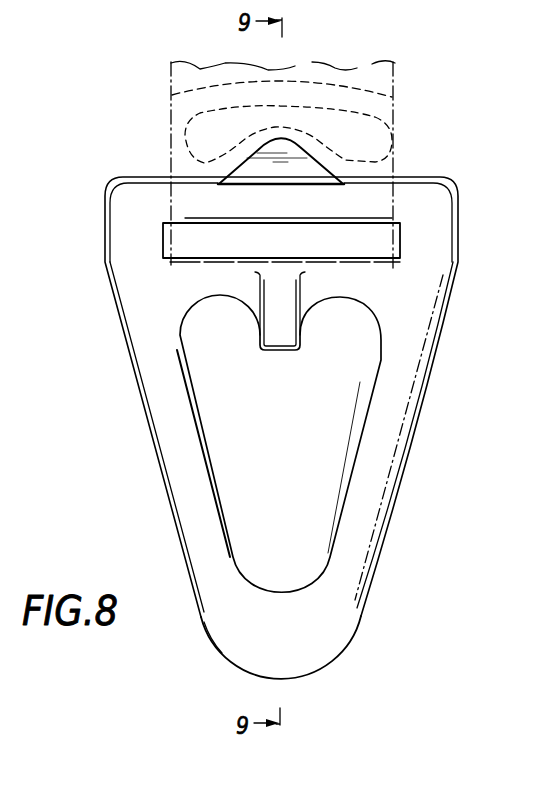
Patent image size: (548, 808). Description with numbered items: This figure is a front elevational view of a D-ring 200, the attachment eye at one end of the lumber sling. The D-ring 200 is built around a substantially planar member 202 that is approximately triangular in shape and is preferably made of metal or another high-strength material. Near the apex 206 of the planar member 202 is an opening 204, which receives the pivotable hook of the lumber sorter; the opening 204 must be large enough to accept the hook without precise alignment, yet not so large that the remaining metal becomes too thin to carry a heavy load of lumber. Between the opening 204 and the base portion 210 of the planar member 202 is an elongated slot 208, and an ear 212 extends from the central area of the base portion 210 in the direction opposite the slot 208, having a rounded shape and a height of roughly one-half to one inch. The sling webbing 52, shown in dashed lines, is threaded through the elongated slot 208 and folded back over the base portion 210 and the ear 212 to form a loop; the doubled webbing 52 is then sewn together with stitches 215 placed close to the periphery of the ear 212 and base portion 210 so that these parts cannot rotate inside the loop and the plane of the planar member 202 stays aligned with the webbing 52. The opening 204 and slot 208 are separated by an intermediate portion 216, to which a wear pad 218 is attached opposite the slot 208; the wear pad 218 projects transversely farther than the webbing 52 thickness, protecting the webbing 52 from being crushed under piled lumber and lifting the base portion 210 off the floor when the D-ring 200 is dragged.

The sling webbing 52 is at (171, 78).
The D-ring 200 is at (420, 455).
The planar member 202 is at (433, 357).
The opening 204 is at (299, 490).
The apex 206 is at (307, 652).
The elongated slot 208 is at (398, 248).
The base portion 210 is at (433, 188).
The ear 212 is at (303, 152).
The stitches 215 is at (380, 130).
The intermediate portion 216 is at (363, 283).
The wear pad 218 is at (285, 340).